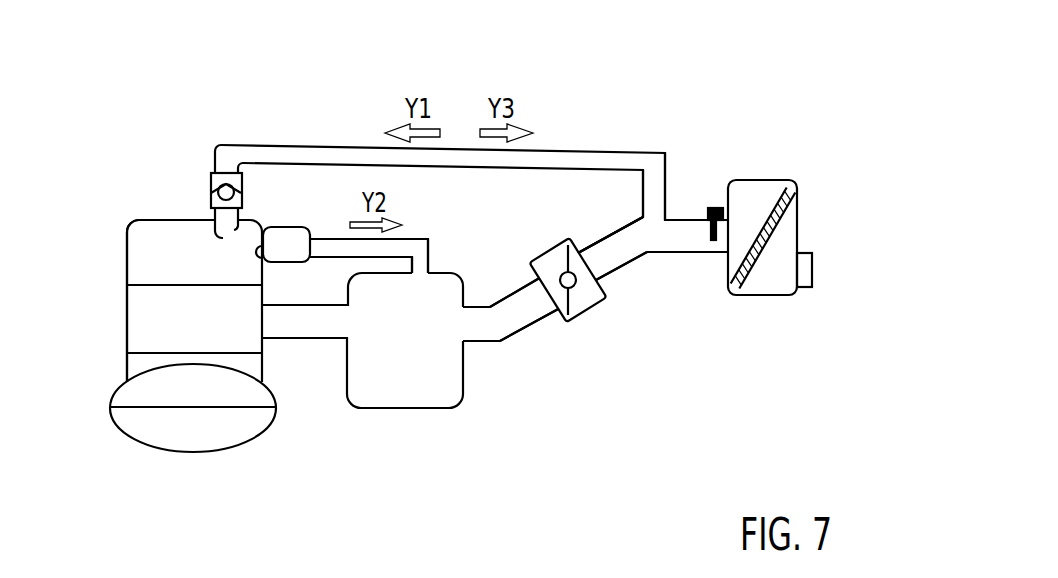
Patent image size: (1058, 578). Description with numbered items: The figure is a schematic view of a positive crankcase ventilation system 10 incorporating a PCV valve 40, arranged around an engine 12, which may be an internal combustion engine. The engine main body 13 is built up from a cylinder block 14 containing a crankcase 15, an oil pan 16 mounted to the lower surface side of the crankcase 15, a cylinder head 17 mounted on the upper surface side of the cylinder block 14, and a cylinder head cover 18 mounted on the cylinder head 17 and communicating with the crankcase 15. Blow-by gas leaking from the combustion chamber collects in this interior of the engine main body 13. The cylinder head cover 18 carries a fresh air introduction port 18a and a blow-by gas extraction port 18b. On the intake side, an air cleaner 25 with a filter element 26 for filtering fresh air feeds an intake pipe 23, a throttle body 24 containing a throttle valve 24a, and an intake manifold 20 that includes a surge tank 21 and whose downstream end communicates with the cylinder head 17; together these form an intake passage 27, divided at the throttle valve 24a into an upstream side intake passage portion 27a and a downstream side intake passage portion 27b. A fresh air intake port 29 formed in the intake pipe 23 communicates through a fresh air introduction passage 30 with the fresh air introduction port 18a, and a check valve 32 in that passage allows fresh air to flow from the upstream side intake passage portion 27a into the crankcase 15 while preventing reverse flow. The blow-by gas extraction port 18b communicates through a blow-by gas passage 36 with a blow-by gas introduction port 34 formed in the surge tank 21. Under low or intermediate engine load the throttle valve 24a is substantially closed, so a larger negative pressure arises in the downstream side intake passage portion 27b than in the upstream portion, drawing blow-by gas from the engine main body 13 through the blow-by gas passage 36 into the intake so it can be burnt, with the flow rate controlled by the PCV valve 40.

The positive crankcase ventilation system 10 is at (630, 127).
The engine 12 is at (133, 175).
The engine main body 13 is at (120, 313).
The cylinder block 14 is at (122, 360).
The crankcase 15 is at (112, 393).
The oil pan 16 is at (115, 425).
The cylinder head 17 is at (127, 290).
The cylinder head cover 18 is at (127, 247).
The fresh air introduction port 18a is at (208, 235).
The blow-by gas extraction port 18b is at (260, 256).
The intake manifold 20 is at (483, 305).
The surge tank 21 is at (371, 410).
The intake pipe 23 is at (681, 218).
The throttle body 24 is at (537, 258).
The throttle valve 24a is at (570, 314).
The air cleaner 25 is at (750, 180).
The filter element 26 is at (783, 217).
The intake passage 27 is at (513, 307).
The upstream side intake passage portion 27a is at (679, 245).
The downstream side intake passage portion 27b is at (481, 332).
The fresh air intake port 29 is at (655, 215).
The fresh air introduction passage 30 is at (568, 162).
The check valve 32 is at (208, 177).
The blow-by gas introduction port 34 is at (420, 271).
The blow-by gas passage 36 is at (407, 247).
The PCV valve 40 is at (287, 226).